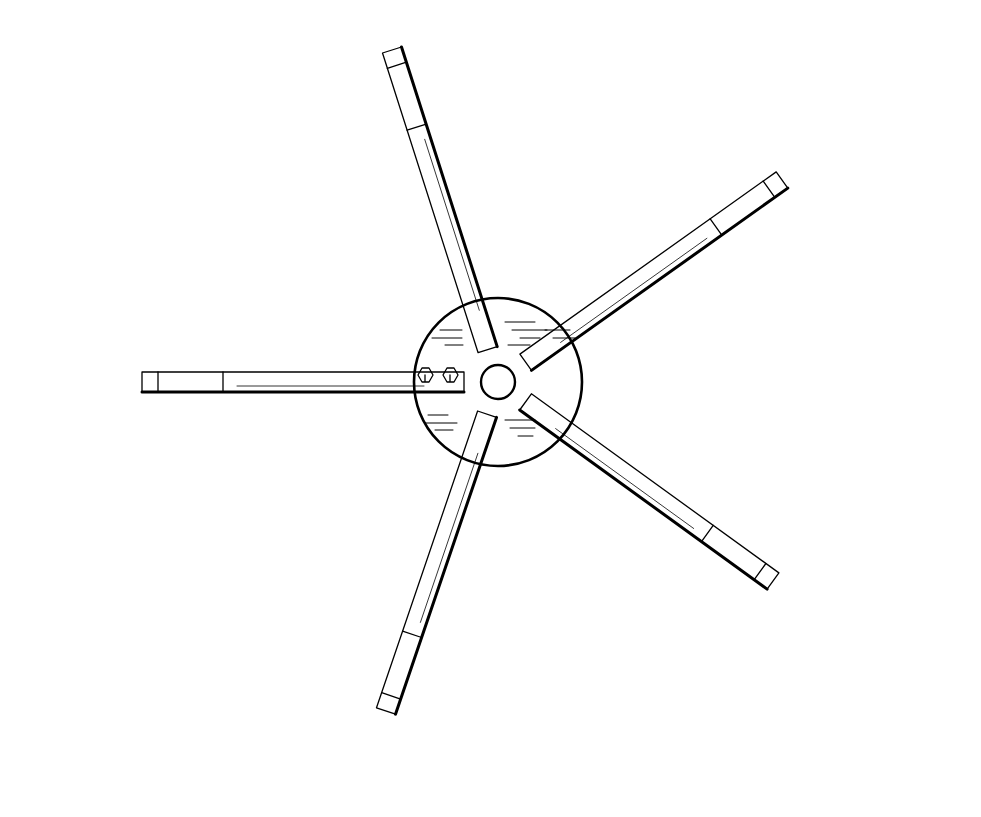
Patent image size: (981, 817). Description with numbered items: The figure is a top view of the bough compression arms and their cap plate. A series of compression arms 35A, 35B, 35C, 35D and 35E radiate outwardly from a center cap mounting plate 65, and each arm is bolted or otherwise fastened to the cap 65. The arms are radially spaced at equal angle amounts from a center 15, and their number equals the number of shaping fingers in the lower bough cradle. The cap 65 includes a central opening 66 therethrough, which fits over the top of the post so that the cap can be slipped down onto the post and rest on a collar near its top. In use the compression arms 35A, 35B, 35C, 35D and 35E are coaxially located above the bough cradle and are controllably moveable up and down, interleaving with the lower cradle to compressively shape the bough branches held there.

The center 15 is at (498, 382).
The center cap mounting plate 65 is at (570, 388).
The central opening 66 is at (482, 390).
The compression arm 35A is at (778, 580).
The compression arm 35B is at (378, 712).
The compression arm 35C is at (148, 377).
The compression arm 35D is at (392, 50).
The compression arm 35E is at (778, 180).